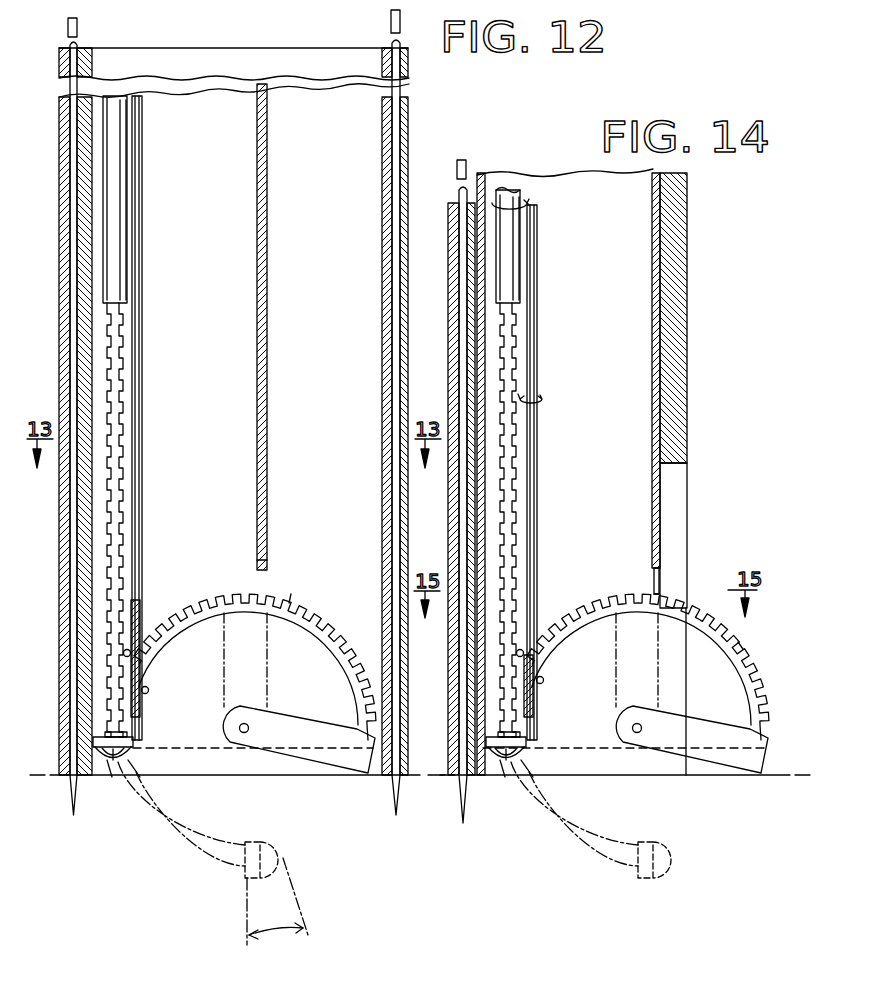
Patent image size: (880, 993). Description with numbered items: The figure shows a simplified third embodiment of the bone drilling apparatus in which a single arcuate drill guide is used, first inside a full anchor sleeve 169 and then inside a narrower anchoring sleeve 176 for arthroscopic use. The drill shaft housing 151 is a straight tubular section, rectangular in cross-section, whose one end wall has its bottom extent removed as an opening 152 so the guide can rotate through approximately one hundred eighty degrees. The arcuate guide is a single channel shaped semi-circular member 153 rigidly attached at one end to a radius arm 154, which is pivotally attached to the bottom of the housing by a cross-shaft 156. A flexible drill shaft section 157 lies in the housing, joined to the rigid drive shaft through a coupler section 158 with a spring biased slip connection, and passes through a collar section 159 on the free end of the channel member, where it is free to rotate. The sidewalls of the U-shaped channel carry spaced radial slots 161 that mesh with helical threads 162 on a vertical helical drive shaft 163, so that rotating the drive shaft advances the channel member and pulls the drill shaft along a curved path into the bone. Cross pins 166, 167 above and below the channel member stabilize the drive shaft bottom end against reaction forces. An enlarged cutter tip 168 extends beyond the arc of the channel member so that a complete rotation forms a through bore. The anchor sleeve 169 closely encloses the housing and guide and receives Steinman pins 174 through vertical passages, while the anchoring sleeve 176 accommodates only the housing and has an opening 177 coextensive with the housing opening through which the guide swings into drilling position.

In FIG. 12, the drill shaft housing 151 is at (266, 382).
In FIG. 14, the drill shaft housing 151 is at (652, 372).
In FIG. 12, the opening 152 is at (268, 566).
In FIG. 14, the opening 152 is at (655, 585).
In FIG. 12, the channel shaped semi-circular member 153 is at (318, 622).
In FIG. 14, the channel shaped semi-circular member 153 is at (693, 588).
In FIG. 12, the radius arm 154 is at (282, 722).
In FIG. 14, the radius arm 154 is at (722, 722).
In FIG. 12, the cross-shaft 156 is at (244, 733).
In FIG. 14, the cross-shaft 156 is at (643, 730).
In FIG. 12, the flexible drill shaft section 157 is at (117, 342).
In FIG. 14, the flexible drill shaft section 157 is at (516, 372).
In FIG. 12, the coupler section 158 is at (118, 152).
In FIG. 14, the coupler section 158 is at (510, 277).
In FIG. 12, the collar section 159 is at (93, 742).
In FIG. 14, the collar section 159 is at (518, 785).
In FIG. 12, the radial slots 161 is at (289, 604).
In FIG. 14, the radial slots 161 is at (737, 644).
In FIG. 12, the helical threads 162 is at (140, 712).
In FIG. 14, the helical threads 162 is at (533, 708).
In FIG. 12, the helical drive shaft 163 is at (138, 387).
In FIG. 14, the helical drive shaft 163 is at (537, 442).
In FIG. 12, the cross pin 166 is at (131, 654).
In FIG. 12, the cross pin 167 is at (148, 688).
In FIG. 12, the enlarged cutter tip 168 is at (112, 768).
In FIG. 14, the enlarged cutter tip 168 is at (527, 756).
In FIG. 12, the anchor sleeve 169 is at (60, 152).
In FIG. 12, the Steinman pins 174 is at (78, 30).
In FIG. 14, the anchoring sleeve 176 is at (688, 272).
In FIG. 14, the opening 177 is at (675, 507).